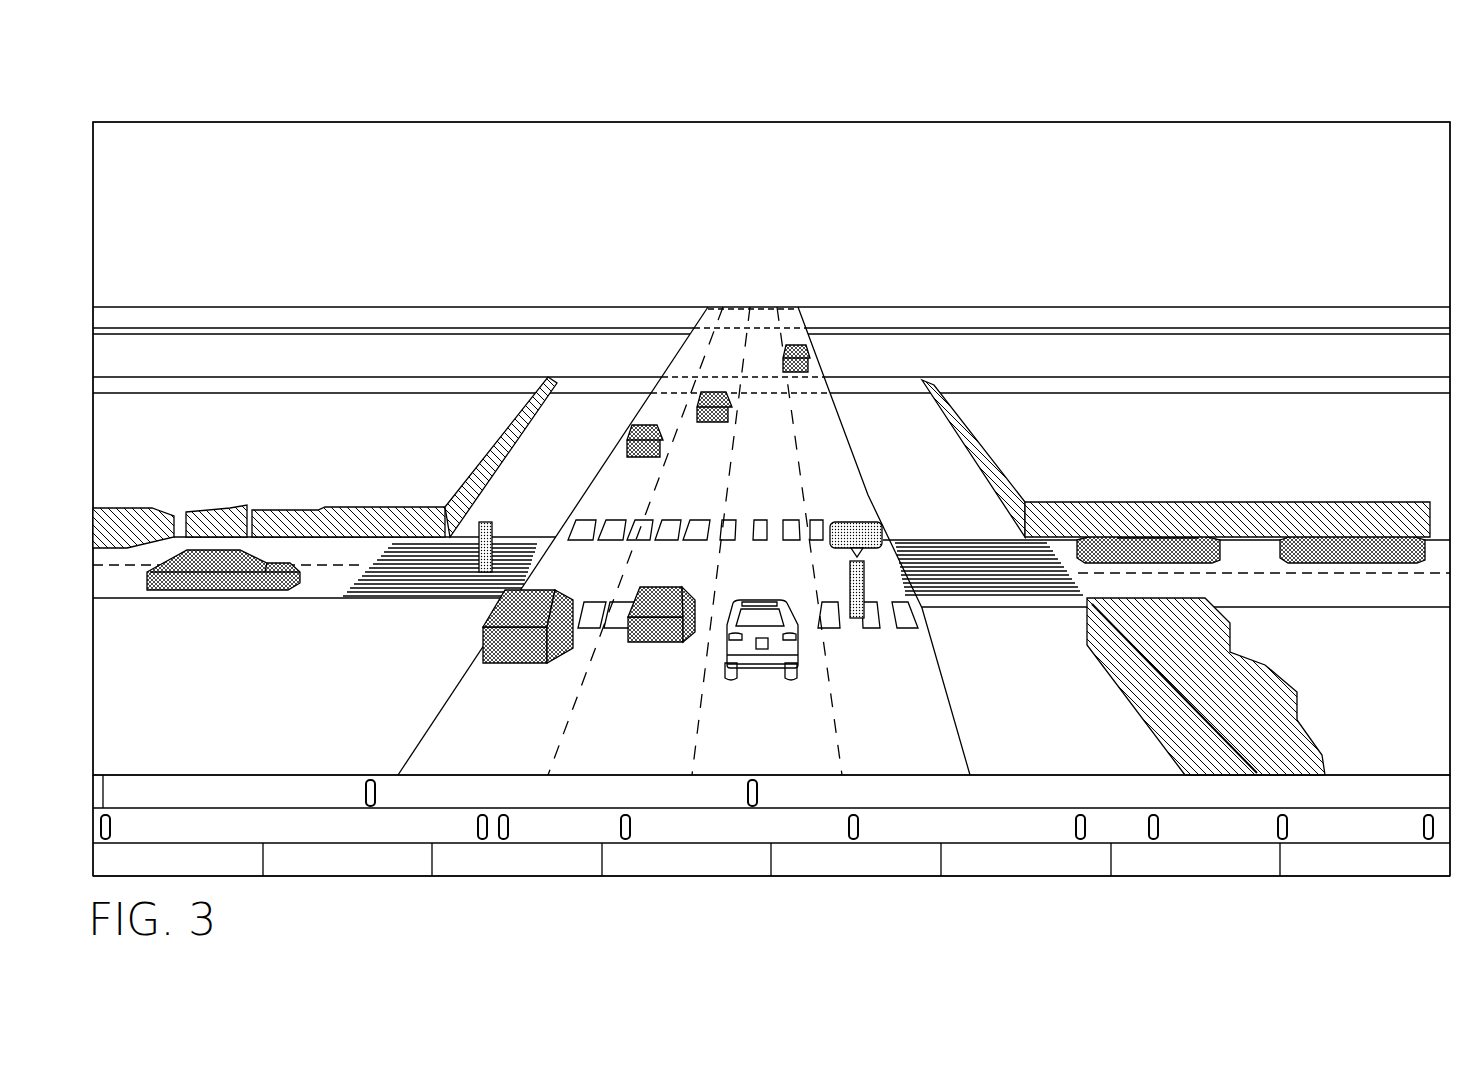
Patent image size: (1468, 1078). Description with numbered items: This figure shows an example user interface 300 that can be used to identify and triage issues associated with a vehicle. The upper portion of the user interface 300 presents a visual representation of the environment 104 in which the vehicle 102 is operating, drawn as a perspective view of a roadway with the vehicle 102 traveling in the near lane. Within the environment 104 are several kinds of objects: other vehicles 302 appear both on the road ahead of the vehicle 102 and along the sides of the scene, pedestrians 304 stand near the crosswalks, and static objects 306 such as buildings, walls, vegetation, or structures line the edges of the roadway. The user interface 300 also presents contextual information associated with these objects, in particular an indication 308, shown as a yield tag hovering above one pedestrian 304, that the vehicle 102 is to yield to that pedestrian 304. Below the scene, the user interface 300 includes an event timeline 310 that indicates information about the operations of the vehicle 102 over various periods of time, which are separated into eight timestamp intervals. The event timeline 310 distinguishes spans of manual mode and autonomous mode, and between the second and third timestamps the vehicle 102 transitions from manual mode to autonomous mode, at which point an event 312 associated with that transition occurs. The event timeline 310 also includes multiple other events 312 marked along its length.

The user interface 300 is at (160, 54).
The environment 104 is at (188, 256).
The vehicle 102 is at (802, 650).
The other vehicles 302 is at (195, 592).
The pedestrians 304 is at (490, 522).
The static objects 306 is at (445, 507).
The indication 308 is at (861, 522).
The event timeline 310 is at (1401, 883).
The event 312 is at (368, 778).